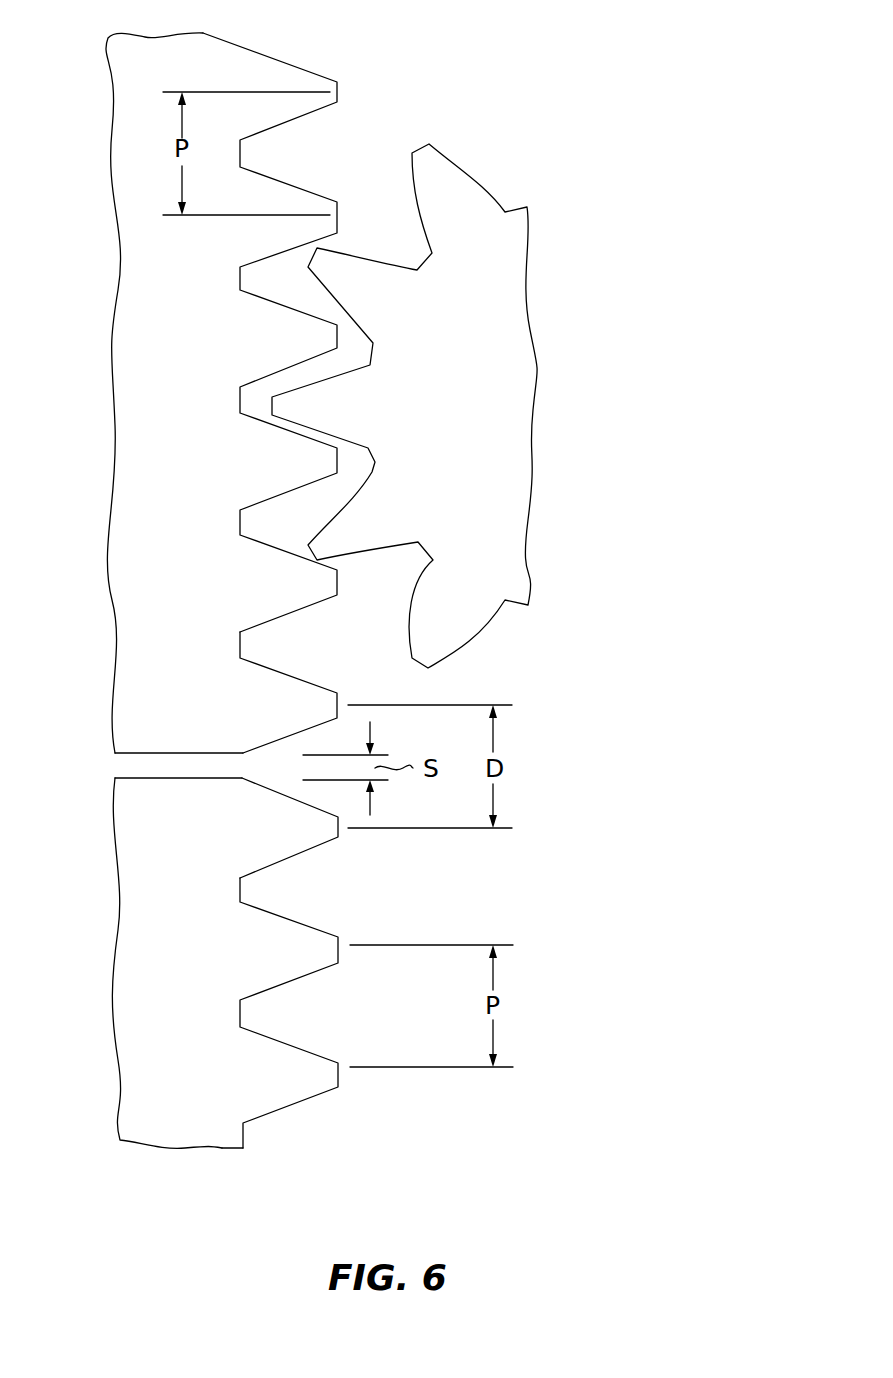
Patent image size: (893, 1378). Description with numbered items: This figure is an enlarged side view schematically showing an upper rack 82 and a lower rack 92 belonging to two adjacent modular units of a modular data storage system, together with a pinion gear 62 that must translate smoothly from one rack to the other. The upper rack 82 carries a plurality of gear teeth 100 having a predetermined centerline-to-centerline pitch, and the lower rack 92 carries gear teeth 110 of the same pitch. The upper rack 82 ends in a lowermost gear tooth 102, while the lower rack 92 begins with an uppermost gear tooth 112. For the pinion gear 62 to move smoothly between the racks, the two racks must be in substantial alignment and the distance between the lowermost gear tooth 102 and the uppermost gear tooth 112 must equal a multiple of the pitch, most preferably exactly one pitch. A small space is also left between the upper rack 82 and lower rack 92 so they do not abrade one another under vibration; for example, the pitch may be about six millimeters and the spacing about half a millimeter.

The pinion gear 62 is at (520, 373).
The upper rack 82 is at (120, 423).
The lower rack 92 is at (137, 972).
The gear teeth 100 is at (322, 50).
The lowermost gear tooth 102 is at (288, 673).
The gear teeth 110 is at (322, 1123).
The uppermost gear tooth 112 is at (288, 858).